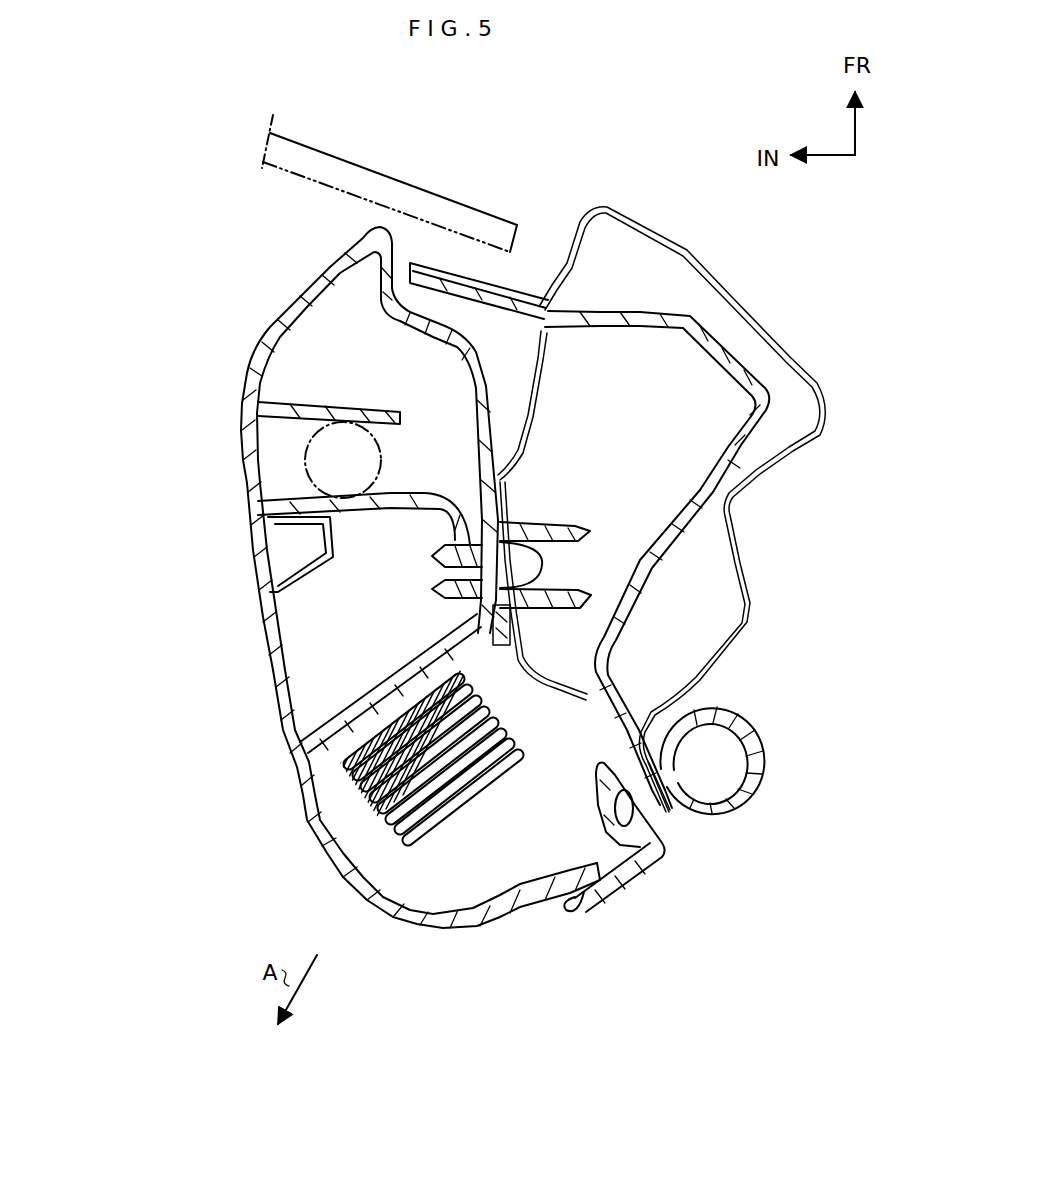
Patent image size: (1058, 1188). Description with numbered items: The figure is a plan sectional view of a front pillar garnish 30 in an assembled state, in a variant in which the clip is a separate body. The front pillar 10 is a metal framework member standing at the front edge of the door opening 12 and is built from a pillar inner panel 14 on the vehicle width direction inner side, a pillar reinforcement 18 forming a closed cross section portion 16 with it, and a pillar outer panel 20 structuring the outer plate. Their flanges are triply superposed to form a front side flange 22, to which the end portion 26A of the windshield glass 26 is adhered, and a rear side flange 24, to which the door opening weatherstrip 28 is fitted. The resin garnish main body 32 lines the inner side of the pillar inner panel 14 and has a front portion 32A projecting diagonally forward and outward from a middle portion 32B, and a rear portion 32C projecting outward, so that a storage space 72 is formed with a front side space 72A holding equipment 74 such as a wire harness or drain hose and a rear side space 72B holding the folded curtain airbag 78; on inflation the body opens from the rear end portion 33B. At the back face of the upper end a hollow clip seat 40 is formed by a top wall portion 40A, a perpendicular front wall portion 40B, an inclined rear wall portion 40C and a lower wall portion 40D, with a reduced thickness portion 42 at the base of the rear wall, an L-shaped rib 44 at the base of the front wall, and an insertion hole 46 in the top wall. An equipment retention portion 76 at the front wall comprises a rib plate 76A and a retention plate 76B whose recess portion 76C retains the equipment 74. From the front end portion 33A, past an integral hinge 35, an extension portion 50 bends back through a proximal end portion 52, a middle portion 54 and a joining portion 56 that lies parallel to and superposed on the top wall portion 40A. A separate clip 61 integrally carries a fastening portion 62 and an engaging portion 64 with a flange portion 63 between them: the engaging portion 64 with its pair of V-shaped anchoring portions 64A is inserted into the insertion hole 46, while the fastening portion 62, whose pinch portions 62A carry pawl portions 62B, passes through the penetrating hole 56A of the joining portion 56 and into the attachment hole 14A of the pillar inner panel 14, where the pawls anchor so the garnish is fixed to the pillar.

The front pillar 10 is at (766, 316).
The door opening 12 is at (658, 1032).
The pillar inner panel 14 is at (561, 686).
The attachment hole 14A is at (535, 545).
The closed cross section portion 16 is at (608, 412).
The pillar reinforcement 18 is at (633, 323).
The pillar outer panel 20 is at (683, 250).
The front side flange 22 is at (431, 262).
The rear side flange 24 is at (627, 817).
The windshield glass 26 is at (365, 158).
The end portion 26A is at (484, 208).
The door opening weatherstrip 28 is at (597, 912).
The front pillar garnish 30 is at (146, 358).
The pillar garnish main body 32 is at (258, 342).
The front portion 32A is at (318, 282).
The middle portion 32B is at (263, 627).
The rear portion 32C is at (450, 930).
The front end portion 33A is at (383, 227).
The rear end portion 33B is at (573, 865).
The integral hinge 35 is at (340, 256).
The clip seat 40 is at (287, 496).
The top wall portion 40A is at (445, 545).
The front wall portion 40B is at (398, 495).
The rear wall portion 40C is at (335, 695).
The lower wall portion 40D is at (322, 656).
The reduced thickness portion 42 is at (300, 745).
The rib 44 is at (270, 612).
The insertion hole 46 is at (470, 623).
The extension portion 50 is at (473, 425).
The proximal end portion 52 is at (373, 275).
The middle portion 54 is at (450, 312).
The joining portion 56 is at (491, 388).
The penetrating hole 56A is at (528, 575).
The separate clip 61 is at (547, 613).
The fastening portion 62 is at (820, 518).
The pinch portions 62A is at (575, 520).
The pawl portions 62B is at (528, 520).
The flange portion 63 is at (480, 512).
The engaging portion 64 is at (352, 566).
The anchoring portions 64A is at (431, 560).
The storage space 72 is at (452, 590).
The front side space 72A is at (341, 357).
The rear side space 72B is at (518, 847).
The equipment 74 is at (385, 436).
The equipment retention portion 76 is at (290, 402).
The rib plate 76A is at (337, 402).
The retention plate 76B is at (280, 467).
The recess portion 76C is at (305, 428).
The curtain airbag 78 is at (460, 827).